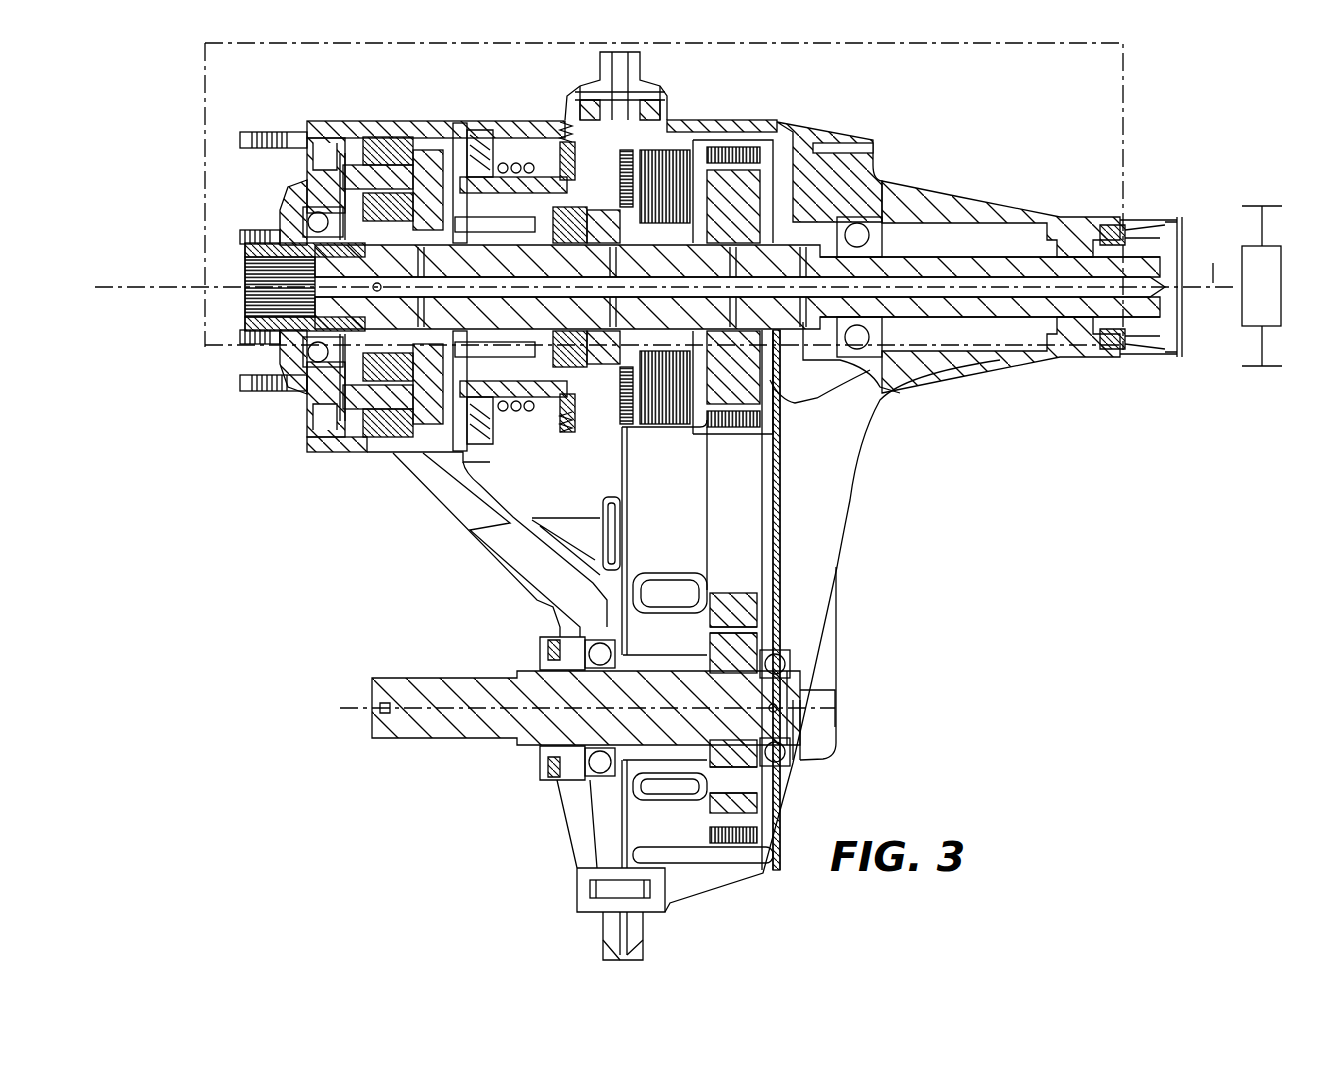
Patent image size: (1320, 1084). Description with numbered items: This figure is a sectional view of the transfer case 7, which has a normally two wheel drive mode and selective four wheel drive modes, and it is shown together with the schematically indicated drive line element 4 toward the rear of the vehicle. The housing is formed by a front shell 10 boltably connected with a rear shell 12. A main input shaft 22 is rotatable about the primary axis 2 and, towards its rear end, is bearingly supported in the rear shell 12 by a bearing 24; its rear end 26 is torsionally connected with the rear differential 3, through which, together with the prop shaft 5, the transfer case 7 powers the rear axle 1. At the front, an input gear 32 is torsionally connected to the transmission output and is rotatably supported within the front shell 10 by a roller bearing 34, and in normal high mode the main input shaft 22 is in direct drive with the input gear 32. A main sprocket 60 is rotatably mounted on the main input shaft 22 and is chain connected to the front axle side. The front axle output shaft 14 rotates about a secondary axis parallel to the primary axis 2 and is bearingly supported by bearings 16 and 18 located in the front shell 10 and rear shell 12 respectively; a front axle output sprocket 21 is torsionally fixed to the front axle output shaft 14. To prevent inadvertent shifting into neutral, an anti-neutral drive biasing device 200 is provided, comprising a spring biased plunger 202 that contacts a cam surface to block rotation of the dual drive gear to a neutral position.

The rear axle 1 is at (1263, 226).
The primary axis 2 is at (487, 287).
The rear differential 3 is at (1263, 346).
The drive unit boundary 4 is at (1127, 105).
The prop shaft 5 is at (1210, 260).
The transfer case 7 is at (322, 70).
The front shell 10 is at (462, 122).
The rear shell 12 is at (775, 122).
The front axle output shaft 14 is at (407, 678).
The bearing 16 is at (597, 767).
The bearing 18 is at (795, 758).
The front axle output sprocket 21 is at (748, 590).
The main input shaft 22 is at (615, 180).
The bearing 24 is at (865, 220).
The rear end 26 is at (1010, 320).
The input gear 32 is at (240, 315).
The roller bearing 34 is at (290, 340).
The main sprocket 60 is at (733, 170).
The anti-neutral drive biasing device 200 is at (560, 125).
The plunger 202 is at (566, 150).